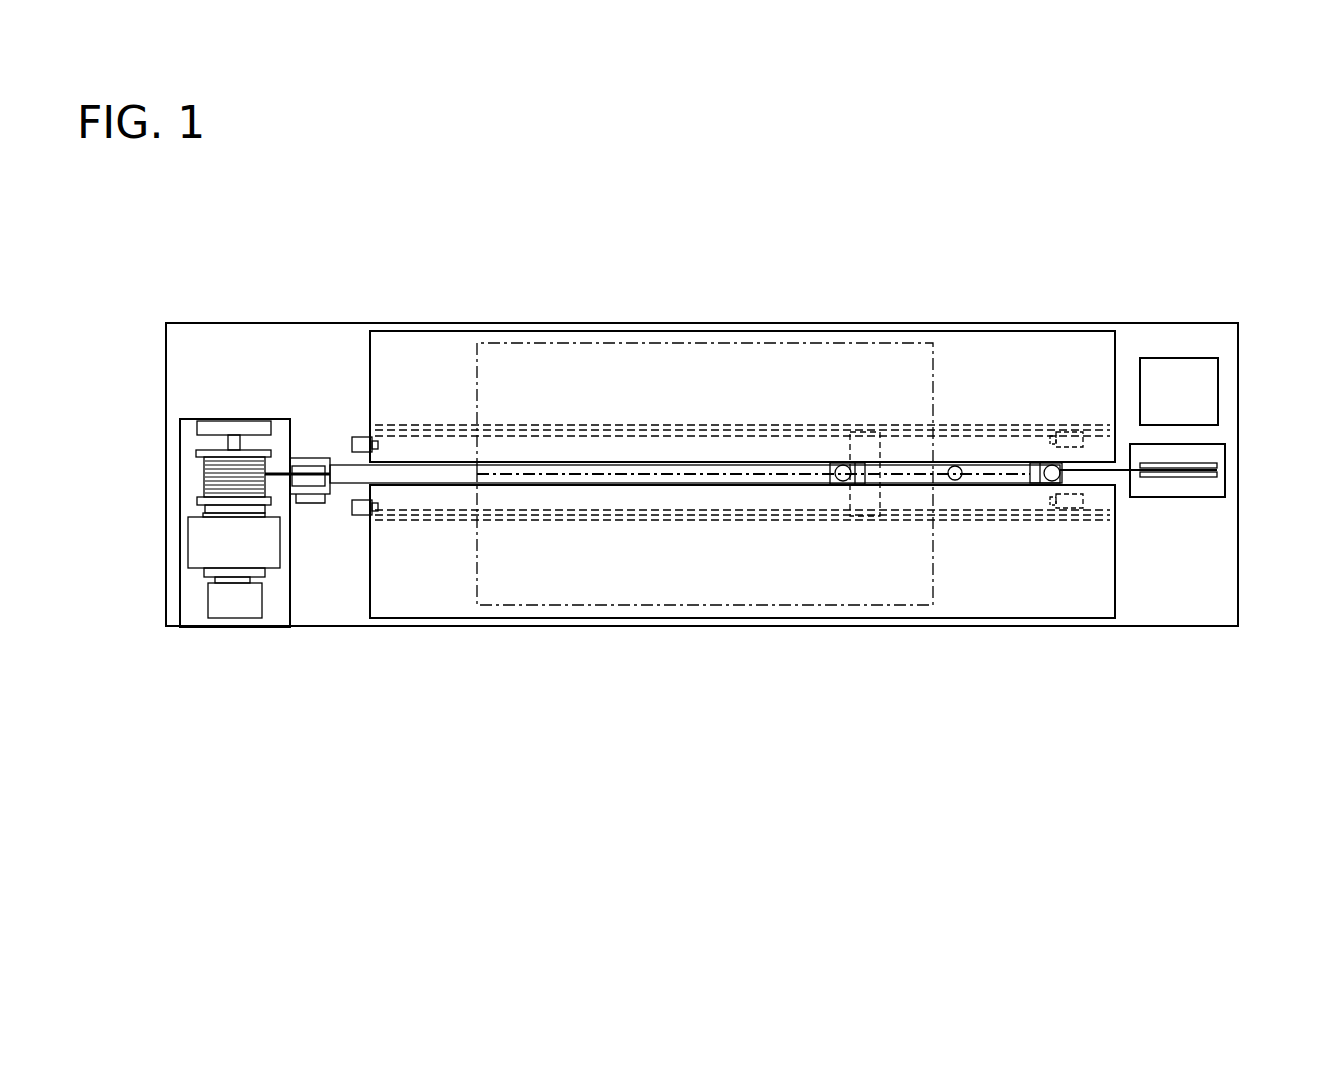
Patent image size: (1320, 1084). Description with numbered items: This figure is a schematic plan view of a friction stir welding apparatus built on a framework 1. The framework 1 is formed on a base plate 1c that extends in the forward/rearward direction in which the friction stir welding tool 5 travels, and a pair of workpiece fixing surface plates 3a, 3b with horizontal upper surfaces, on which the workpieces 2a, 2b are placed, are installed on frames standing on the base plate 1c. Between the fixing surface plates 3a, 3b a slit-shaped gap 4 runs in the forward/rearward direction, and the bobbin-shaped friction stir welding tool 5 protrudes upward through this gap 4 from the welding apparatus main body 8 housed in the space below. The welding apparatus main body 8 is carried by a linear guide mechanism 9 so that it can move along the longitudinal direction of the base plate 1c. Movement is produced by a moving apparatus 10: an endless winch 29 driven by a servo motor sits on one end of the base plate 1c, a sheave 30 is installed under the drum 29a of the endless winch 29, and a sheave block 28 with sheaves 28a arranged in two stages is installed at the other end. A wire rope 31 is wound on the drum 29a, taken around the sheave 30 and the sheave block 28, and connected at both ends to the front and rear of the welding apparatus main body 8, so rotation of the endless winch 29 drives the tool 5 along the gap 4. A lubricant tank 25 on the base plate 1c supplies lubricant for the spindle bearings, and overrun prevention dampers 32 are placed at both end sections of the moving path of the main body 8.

The framework 1 is at (327, 316).
The base plate 1c is at (221, 323).
The workpiece 2a is at (493, 343).
The workpiece 2b is at (527, 605).
The workpiece fixing surface plate 3a is at (573, 331).
The workpiece fixing surface plate 3b is at (645, 618).
The slit-shaped gap 4 is at (868, 450).
The friction stir welding tool 5 is at (953, 465).
The welding apparatus main body 8 is at (986, 425).
The linear guide mechanism 9 is at (1028, 425).
The moving apparatus 10 is at (166, 566).
The lubricant tank 25 is at (1176, 358).
The sheave block 28 is at (1225, 490).
The sheave 28a is at (1217, 466).
The endless winch 29 is at (203, 503).
The drum 29a is at (205, 470).
The sheave 30 is at (305, 503).
The wire rope 31 is at (342, 458).
The welding apparatus main body overrun prevention damper 32 is at (356, 437).